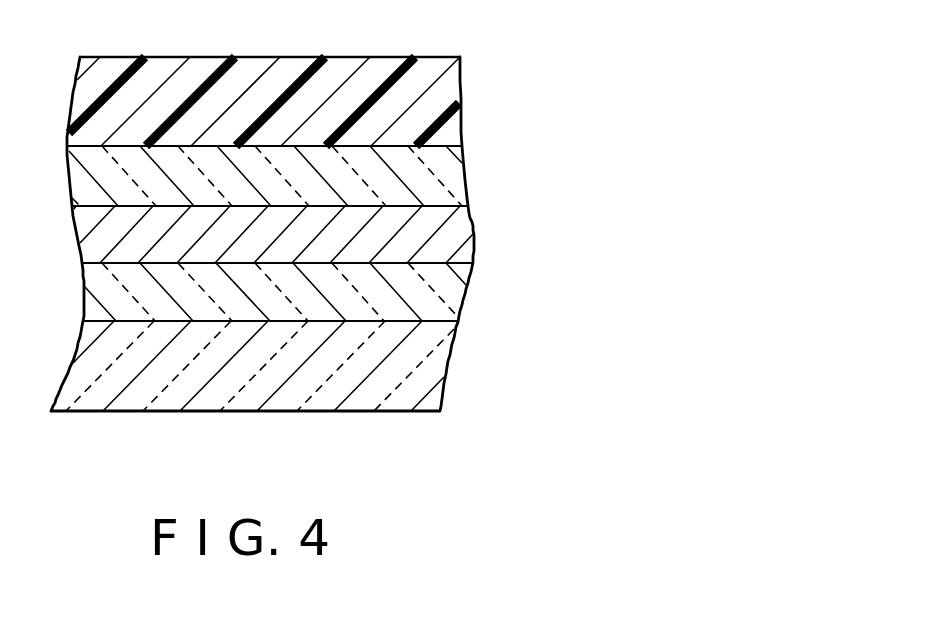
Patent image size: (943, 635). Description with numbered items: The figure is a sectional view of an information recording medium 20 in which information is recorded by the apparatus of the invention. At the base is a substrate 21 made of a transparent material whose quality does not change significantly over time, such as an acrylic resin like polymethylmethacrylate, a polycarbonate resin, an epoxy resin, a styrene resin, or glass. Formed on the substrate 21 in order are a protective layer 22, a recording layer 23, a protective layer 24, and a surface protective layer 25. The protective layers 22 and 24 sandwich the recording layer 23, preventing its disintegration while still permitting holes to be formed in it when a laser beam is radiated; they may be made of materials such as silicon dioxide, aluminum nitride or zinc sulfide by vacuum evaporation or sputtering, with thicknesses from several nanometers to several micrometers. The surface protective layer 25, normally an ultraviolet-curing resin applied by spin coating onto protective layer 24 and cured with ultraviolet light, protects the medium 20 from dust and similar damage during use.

The information recording medium 20 is at (325, 209).
The substrate 21 is at (440, 363).
The protective layer 22 is at (455, 298).
The recording layer 23 is at (460, 233).
The protective layer 24 is at (457, 180).
The surface protective layer 25 is at (447, 104).